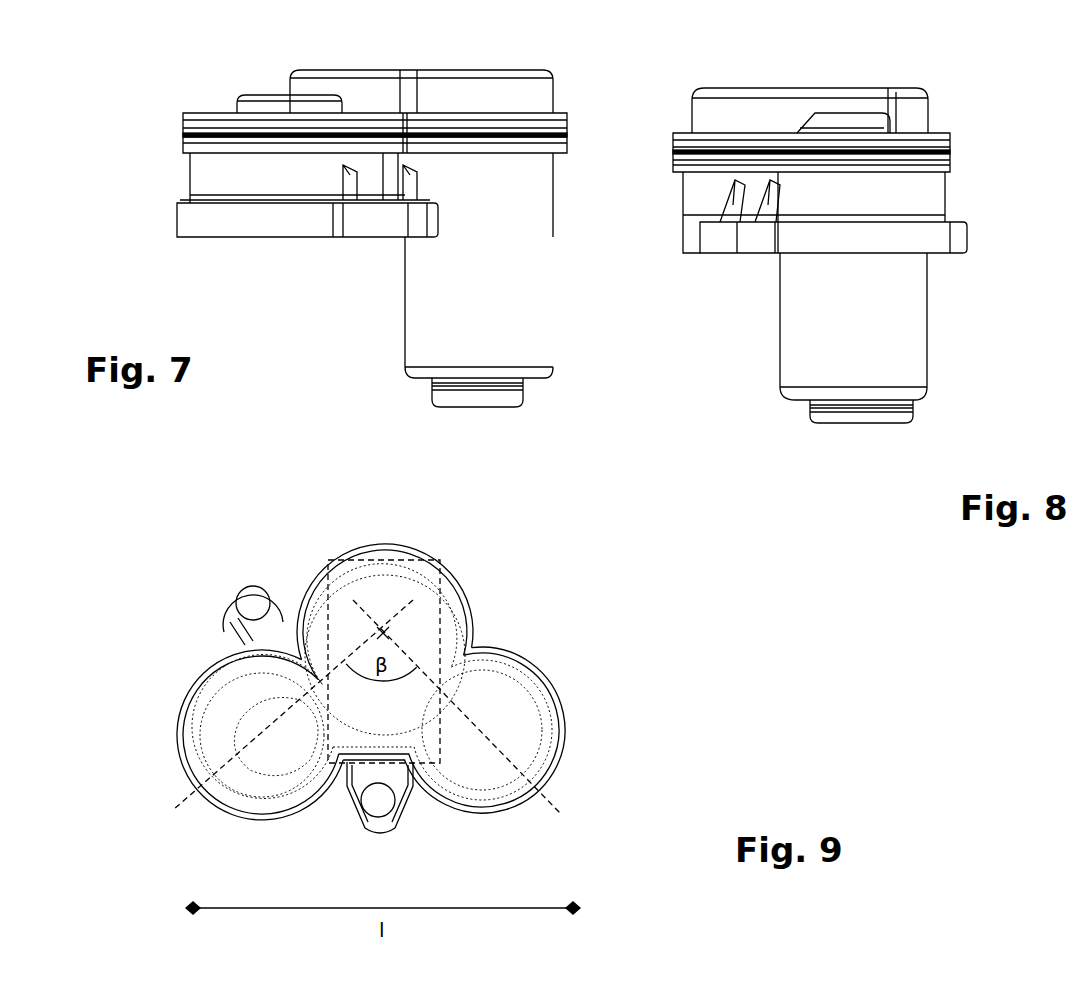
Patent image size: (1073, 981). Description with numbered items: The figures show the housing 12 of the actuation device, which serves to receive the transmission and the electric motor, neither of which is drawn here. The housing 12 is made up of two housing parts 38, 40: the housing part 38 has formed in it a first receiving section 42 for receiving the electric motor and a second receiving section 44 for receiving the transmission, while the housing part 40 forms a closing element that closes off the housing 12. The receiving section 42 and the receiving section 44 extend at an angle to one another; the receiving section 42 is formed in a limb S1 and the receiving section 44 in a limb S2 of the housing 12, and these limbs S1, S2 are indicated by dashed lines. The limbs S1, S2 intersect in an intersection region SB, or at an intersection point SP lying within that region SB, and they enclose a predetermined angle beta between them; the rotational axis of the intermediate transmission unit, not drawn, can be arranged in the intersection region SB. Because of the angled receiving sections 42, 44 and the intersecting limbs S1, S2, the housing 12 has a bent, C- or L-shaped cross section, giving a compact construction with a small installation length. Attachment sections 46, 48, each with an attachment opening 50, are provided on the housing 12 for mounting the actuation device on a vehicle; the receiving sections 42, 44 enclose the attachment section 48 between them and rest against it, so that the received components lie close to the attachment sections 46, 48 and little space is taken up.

In FIG. 7, the housing 12 is at (115, 194).
In FIG. 8, the housing 12 is at (979, 90).
In FIG. 9, the housing 12 is at (548, 601).
In FIG. 7, the housing part 38 is at (553, 160).
In FIG. 8, the housing part 38 is at (950, 252).
In FIG. 7, the housing part 40 is at (323, 88).
In FIG. 8, the housing part 40 is at (714, 105).
In FIG. 9, the housing part 40 is at (350, 552).
In FIG. 7, the first receiving section 42 is at (417, 332).
In FIG. 8, the first receiving section 42 is at (820, 368).
In FIG. 9, the first receiving section 42 is at (566, 757).
In FIG. 7, the second receiving section 44 is at (243, 228).
In FIG. 8, the second receiving section 44 is at (703, 255).
In FIG. 9, the second receiving section 44 is at (178, 722).
In FIG. 9, the attachment section 46 is at (250, 572).
In FIG. 9, the attachment section 48 is at (355, 822).
In FIG. 9, the attachment opening 50 is at (238, 600).
In FIG. 9, the intersection region SB is at (405, 560).
In FIG. 9, the intersection point SP is at (383, 633).
In FIG. 9, the limb S1 is at (473, 715).
In FIG. 9, the limb S2 is at (285, 718).